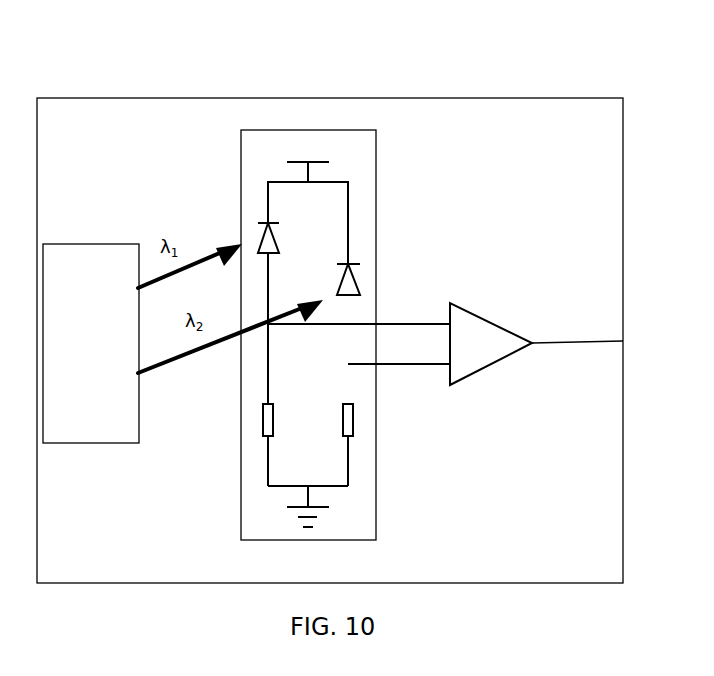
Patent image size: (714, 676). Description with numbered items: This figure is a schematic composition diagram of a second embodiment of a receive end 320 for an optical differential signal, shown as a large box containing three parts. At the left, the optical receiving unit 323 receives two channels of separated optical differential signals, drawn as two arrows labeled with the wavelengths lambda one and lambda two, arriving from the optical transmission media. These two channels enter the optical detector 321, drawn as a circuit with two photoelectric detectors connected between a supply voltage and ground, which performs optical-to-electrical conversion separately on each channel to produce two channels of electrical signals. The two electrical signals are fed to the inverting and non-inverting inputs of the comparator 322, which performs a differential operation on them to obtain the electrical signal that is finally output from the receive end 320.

The receive end 320 is at (330, 98).
The optical detector 321 is at (376, 205).
The comparator 322 is at (483, 317).
The optical receiving unit 323 is at (89, 244).